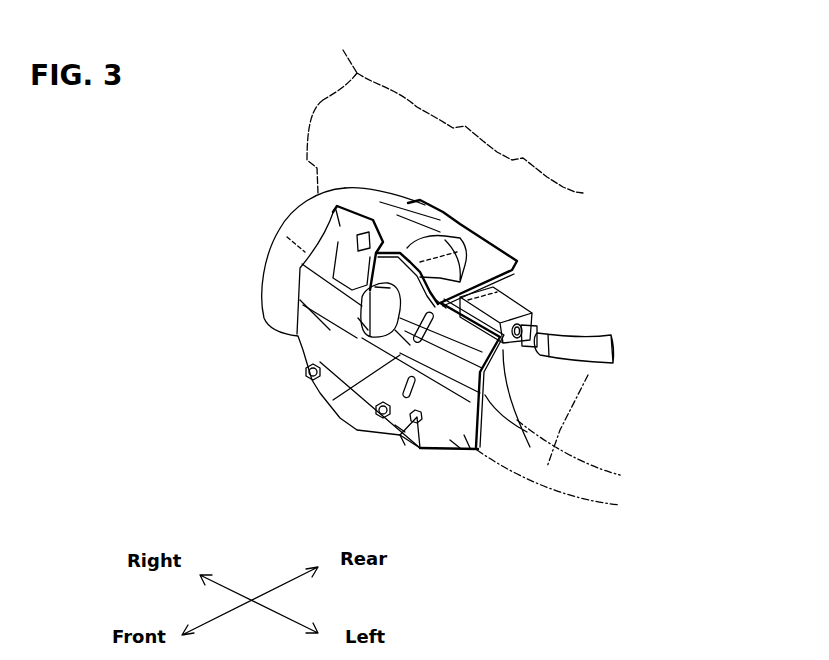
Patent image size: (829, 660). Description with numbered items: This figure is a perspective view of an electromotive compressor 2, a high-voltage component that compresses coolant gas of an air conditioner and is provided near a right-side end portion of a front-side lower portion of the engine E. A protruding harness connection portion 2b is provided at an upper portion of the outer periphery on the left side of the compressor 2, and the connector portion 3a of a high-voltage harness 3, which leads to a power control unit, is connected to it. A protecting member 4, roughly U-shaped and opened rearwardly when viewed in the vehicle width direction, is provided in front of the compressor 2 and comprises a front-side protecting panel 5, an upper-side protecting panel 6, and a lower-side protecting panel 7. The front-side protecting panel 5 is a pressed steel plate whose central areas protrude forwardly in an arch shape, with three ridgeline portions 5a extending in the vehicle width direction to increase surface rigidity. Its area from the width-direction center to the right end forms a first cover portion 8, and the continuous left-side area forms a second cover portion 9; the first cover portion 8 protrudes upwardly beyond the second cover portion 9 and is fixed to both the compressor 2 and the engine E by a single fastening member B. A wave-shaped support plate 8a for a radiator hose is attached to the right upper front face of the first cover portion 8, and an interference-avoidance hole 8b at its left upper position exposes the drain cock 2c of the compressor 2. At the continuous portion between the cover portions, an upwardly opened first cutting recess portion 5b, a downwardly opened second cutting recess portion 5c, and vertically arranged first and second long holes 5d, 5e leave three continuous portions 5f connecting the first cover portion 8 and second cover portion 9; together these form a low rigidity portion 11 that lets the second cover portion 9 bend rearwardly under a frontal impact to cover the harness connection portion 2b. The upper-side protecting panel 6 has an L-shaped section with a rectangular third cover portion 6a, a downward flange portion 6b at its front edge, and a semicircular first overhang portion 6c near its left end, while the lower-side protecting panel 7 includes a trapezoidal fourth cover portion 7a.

The electromotive compressor 2 is at (289, 203).
The harness connection portion 2b is at (527, 297).
The drain cock 2c is at (365, 328).
The high-voltage harness 3 is at (608, 370).
The connector portion 3a is at (532, 318).
The protecting member 4 is at (282, 252).
The front-side protecting panel 5 is at (320, 395).
The ridgeline portions 5a is at (488, 418).
The first cutting recess portion 5b is at (400, 334).
The second cutting recess portion 5c is at (400, 423).
The first long hole 5d is at (403, 360).
The second long hole 5e is at (403, 417).
The continuous portions 5f is at (510, 271).
The upper-side protecting panel 6 is at (425, 195).
The third cover portion 6a is at (438, 212).
The flange portion 6b is at (441, 302).
The first overhang portion 6c is at (460, 226).
The lower-side protecting panel 7 is at (429, 461).
The fourth cover portion 7a is at (455, 455).
The first cover portion 8 is at (300, 295).
The support plate 8a is at (365, 203).
The interference-avoidance hole 8b is at (360, 314).
The second cover portion 9 is at (469, 442).
The low rigidity portion 11 is at (434, 400).
The fastening member B is at (342, 192).
The engine E is at (322, 100).